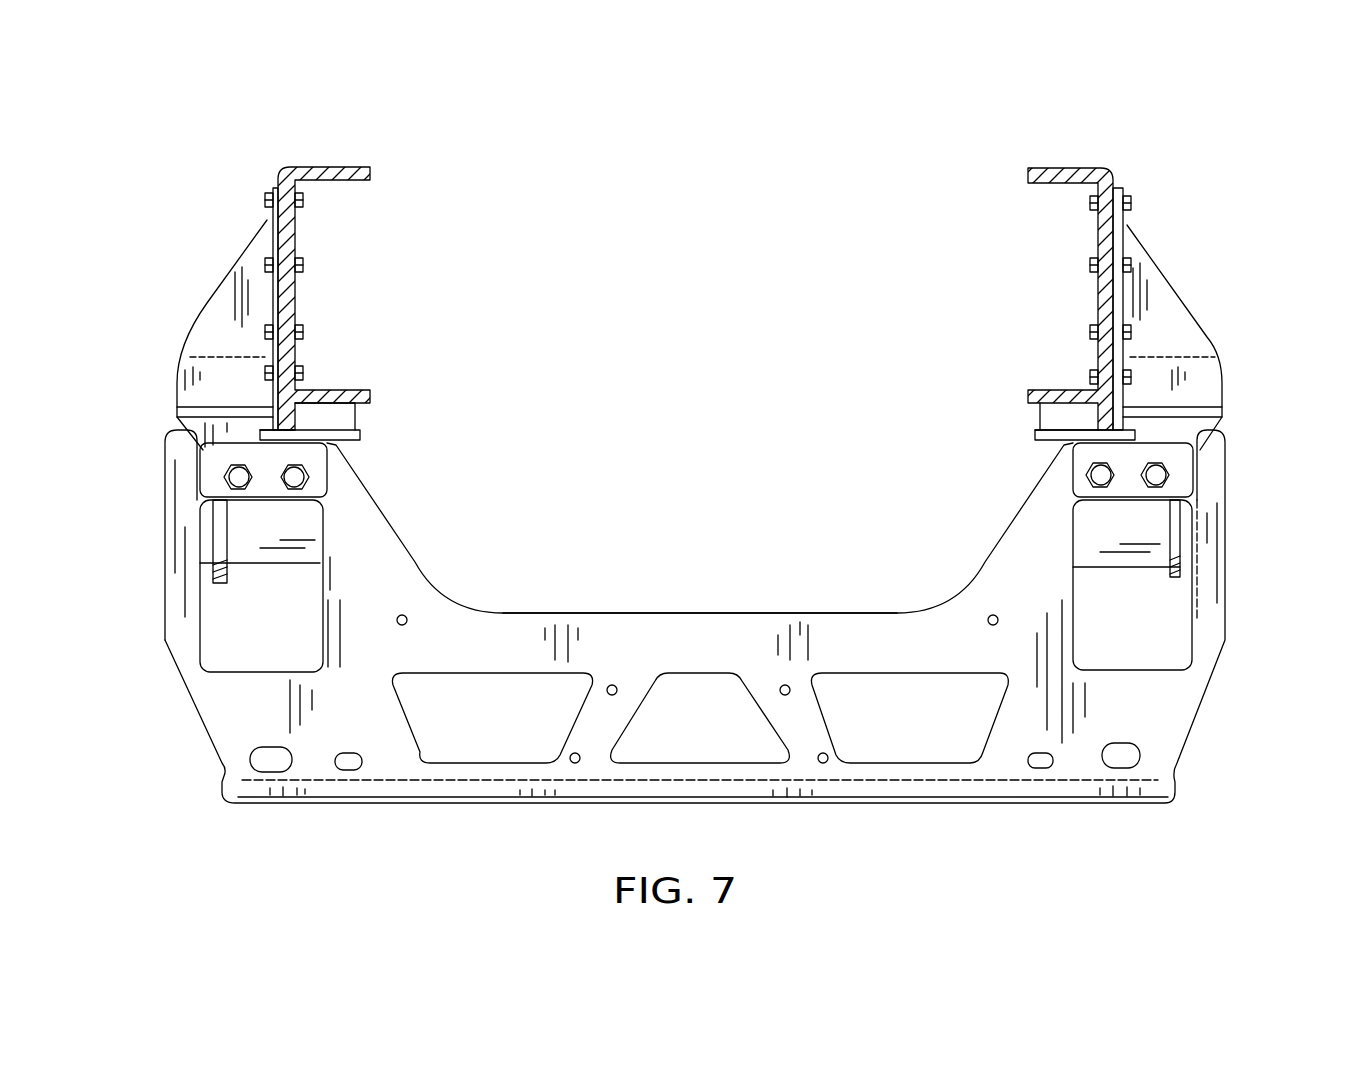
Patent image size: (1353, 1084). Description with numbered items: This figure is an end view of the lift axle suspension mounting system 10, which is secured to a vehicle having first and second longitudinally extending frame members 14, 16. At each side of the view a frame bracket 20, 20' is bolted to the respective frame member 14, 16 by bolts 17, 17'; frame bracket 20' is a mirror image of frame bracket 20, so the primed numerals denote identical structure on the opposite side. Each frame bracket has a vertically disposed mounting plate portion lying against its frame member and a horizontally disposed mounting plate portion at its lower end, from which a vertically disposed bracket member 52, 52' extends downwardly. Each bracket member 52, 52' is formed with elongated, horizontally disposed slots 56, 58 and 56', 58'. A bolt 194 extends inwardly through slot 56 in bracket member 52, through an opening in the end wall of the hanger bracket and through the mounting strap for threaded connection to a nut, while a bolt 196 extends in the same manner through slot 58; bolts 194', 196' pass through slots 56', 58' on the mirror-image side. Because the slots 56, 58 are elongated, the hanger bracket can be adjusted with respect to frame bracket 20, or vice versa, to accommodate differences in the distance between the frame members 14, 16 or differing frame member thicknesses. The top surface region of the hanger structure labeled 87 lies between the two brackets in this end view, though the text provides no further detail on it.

The lift axle suspension mounting system 10 is at (727, 552).
The first longitudinally extending frame member 14 is at (1057, 172).
The second longitudinally extending frame member 16 is at (348, 172).
The bolts 17 is at (1043, 290).
The bolts 17' is at (347, 286).
The frame bracket 20 is at (1160, 319).
The frame bracket 20' is at (240, 319).
The bracket member 52 is at (1061, 470).
The bracket member 52' is at (341, 466).
The slot 56 is at (1235, 549).
The slot 56' is at (179, 492).
The slot 58 is at (1016, 496).
The slot 58' is at (371, 490).
The top surface of frame 87 is at (763, 618).
The bolt 194 is at (1221, 508).
The bolt 194' is at (170, 548).
The bolt 196 is at (1044, 528).
The bolt 196' is at (346, 522).